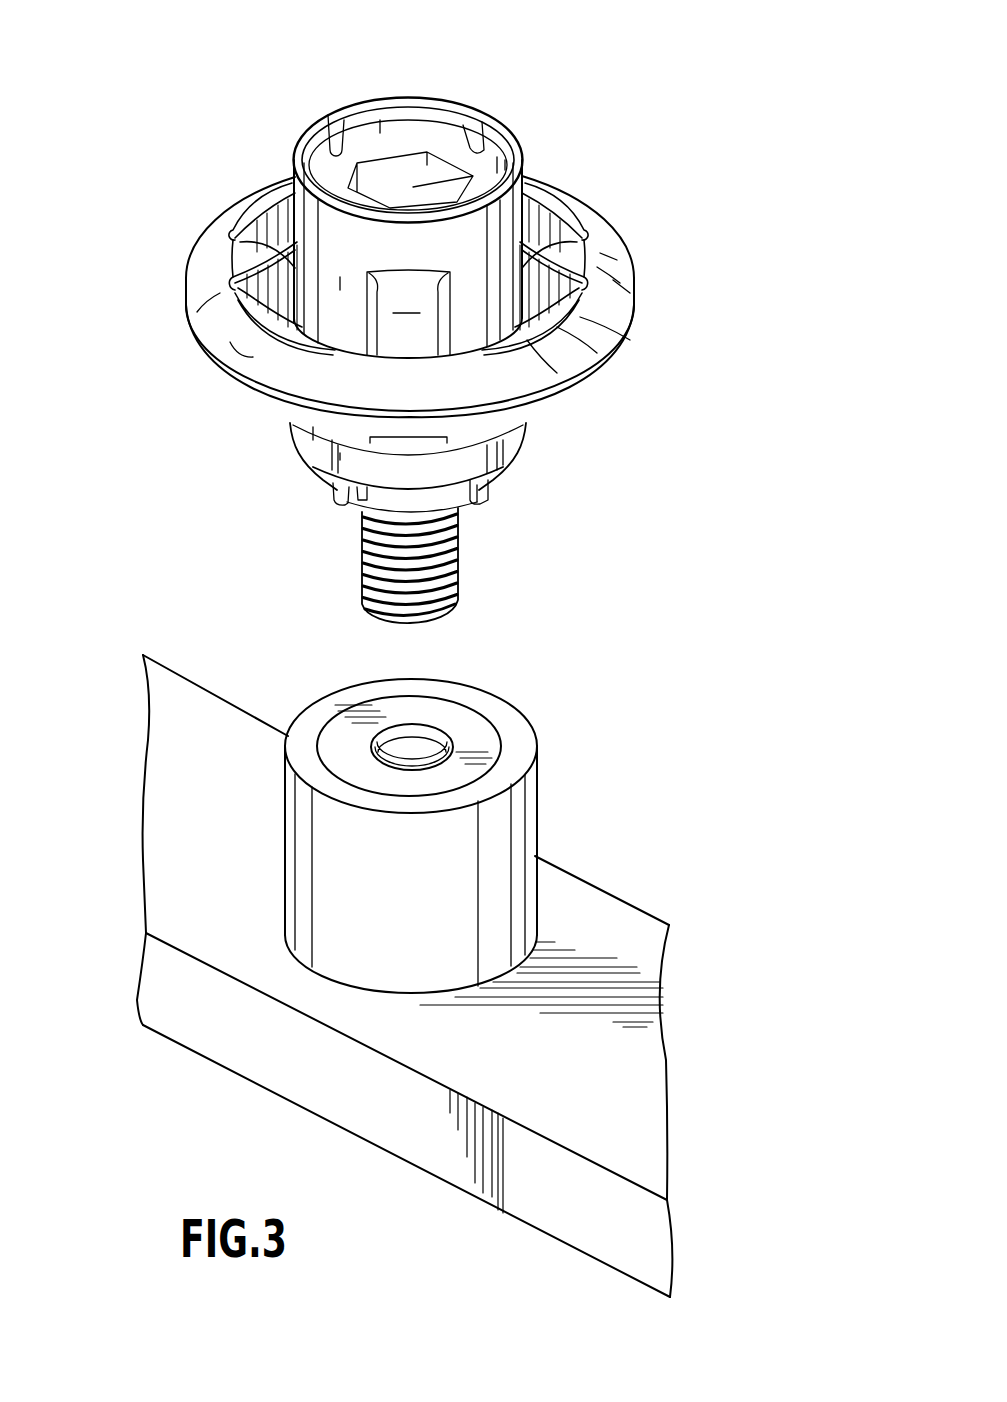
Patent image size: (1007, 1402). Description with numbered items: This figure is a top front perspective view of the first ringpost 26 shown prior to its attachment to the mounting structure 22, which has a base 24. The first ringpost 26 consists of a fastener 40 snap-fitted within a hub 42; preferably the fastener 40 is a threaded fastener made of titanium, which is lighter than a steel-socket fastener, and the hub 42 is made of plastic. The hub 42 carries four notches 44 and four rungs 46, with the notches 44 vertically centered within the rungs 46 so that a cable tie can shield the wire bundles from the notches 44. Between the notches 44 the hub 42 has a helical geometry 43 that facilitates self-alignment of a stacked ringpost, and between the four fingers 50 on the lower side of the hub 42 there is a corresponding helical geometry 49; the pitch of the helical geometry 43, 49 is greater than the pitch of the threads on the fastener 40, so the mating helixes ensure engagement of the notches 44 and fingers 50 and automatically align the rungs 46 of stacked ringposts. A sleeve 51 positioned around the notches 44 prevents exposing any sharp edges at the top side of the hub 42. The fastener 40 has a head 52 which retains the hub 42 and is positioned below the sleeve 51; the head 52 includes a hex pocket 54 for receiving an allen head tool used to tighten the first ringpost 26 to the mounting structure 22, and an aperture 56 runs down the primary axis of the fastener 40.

The mounting structure 22 is at (207, 878).
The base 24 is at (513, 808).
The first ringpost 26 is at (197, 247).
The fastener 40 is at (367, 563).
The hub 42 is at (253, 347).
The helical geometry 43 is at (438, 100).
The notches 44 is at (480, 117).
The rungs 46 is at (272, 218).
The helical geometry 49 is at (362, 510).
The fingers 50 is at (330, 495).
The sleeve 51 is at (313, 127).
The head 52 is at (373, 153).
The hex pocket 54 is at (407, 170).
The aperture 56 is at (483, 173).